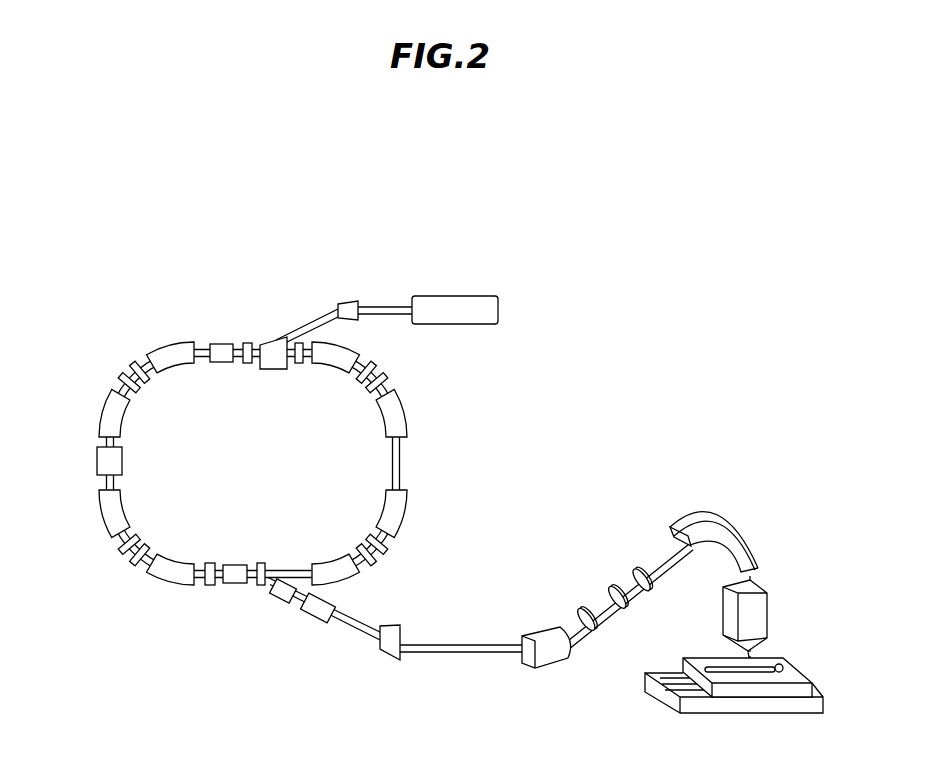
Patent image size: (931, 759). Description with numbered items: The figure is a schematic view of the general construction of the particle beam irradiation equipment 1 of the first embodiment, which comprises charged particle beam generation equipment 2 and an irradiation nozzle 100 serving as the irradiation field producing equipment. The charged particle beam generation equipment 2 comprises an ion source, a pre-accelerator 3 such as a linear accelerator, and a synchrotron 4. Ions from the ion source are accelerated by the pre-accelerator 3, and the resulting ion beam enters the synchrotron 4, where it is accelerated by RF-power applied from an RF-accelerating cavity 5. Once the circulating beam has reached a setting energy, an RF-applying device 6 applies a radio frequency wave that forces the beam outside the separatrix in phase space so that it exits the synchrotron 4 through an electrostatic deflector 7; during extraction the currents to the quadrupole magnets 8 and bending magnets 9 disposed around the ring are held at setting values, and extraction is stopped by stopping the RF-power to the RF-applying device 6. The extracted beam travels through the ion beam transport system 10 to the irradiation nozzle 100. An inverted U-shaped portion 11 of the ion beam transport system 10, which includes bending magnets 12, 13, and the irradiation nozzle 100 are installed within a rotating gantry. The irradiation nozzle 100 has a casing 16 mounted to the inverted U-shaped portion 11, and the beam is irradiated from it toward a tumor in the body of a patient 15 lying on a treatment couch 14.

The particle beam irradiation equipment 1 is at (507, 560).
The charged particle beam generation equipment 2 is at (420, 265).
The pre-accelerator 3 is at (498, 311).
The synchrotron 4 is at (218, 455).
The RF-accelerating cavity 5 is at (123, 469).
The RF-applying device 6 is at (219, 343).
The electrostatic deflector 7 is at (282, 598).
The quadrupole magnets 8 is at (158, 386).
The bending magnets 9 is at (112, 403).
The ion beam transport system 10 is at (601, 616).
The inverted U-shaped portion 11 is at (623, 578).
The bending magnet 12 is at (562, 664).
The bending magnet 13 is at (699, 522).
The treatment couch 14 is at (760, 660).
The patient 15 is at (768, 658).
The casing 16 is at (729, 611).
The irradiation nozzle 100 is at (769, 601).